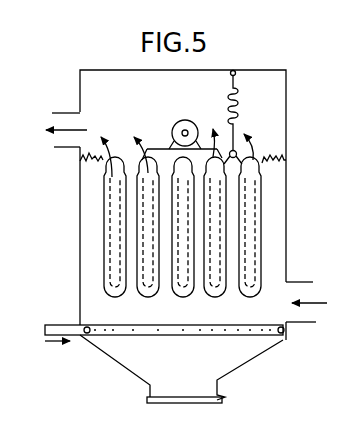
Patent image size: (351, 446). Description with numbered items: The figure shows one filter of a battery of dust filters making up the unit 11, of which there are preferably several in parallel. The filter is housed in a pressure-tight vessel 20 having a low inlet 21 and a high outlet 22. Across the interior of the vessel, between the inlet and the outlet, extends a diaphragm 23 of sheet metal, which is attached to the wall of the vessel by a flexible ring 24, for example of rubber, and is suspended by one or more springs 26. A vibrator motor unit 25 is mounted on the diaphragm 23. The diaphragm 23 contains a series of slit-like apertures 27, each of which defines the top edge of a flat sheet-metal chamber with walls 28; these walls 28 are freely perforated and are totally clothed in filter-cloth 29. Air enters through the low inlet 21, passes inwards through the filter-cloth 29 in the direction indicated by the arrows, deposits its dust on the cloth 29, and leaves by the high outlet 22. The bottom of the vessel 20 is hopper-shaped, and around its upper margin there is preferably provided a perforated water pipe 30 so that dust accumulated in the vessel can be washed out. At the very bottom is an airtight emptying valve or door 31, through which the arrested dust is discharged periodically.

The unit 11 is at (290, 91).
The pressure-tight vessel 20 is at (285, 216).
The low inlet 21 is at (310, 290).
The high outlet 22 is at (50, 143).
The diaphragm 23 is at (246, 168).
The flexible ring 24 is at (92, 160).
The vibrator motor unit 25 is at (175, 122).
The spring 26 is at (237, 94).
The slit-like aperture 27 is at (143, 171).
The wall 28 is at (143, 253).
The filter-cloth 29 is at (143, 278).
The perforated water pipe 30 is at (277, 338).
The emptying valve or door 31 is at (155, 406).